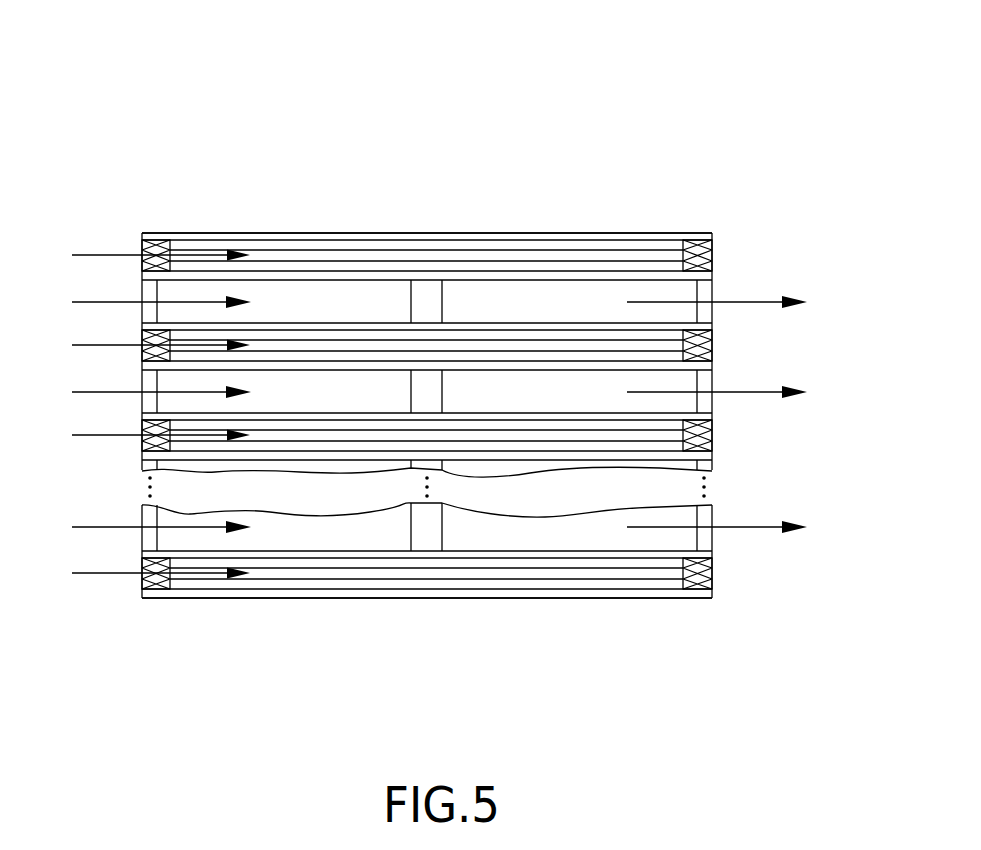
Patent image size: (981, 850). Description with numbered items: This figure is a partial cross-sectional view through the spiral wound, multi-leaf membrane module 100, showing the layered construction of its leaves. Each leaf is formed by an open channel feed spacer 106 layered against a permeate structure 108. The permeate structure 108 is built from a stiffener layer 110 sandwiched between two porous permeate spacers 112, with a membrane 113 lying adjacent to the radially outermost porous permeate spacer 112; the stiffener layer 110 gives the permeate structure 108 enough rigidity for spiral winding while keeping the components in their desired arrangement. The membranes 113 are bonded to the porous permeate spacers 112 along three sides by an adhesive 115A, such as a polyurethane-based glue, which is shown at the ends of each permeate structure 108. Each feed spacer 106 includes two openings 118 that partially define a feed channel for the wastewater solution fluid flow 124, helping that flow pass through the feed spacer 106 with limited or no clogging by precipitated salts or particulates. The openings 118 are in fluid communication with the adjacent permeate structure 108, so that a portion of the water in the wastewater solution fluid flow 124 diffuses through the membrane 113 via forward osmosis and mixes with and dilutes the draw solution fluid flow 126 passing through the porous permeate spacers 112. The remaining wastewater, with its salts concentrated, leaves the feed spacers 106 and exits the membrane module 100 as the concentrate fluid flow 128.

The membrane module 100 is at (717, 80).
The feed spacer 106 is at (387, 300).
The permeate structure 108 is at (134, 229).
The stiffener layer 110 is at (193, 250).
The porous permeate spacer 112 is at (263, 265).
The membrane 113 is at (562, 278).
The adhesive 115A is at (157, 240).
The opening 118 is at (293, 287).
The wastewater solution fluid flow 124 is at (85, 301).
The draw solution fluid flow 126 is at (127, 254).
The concentrate fluid flow 128 is at (760, 301).